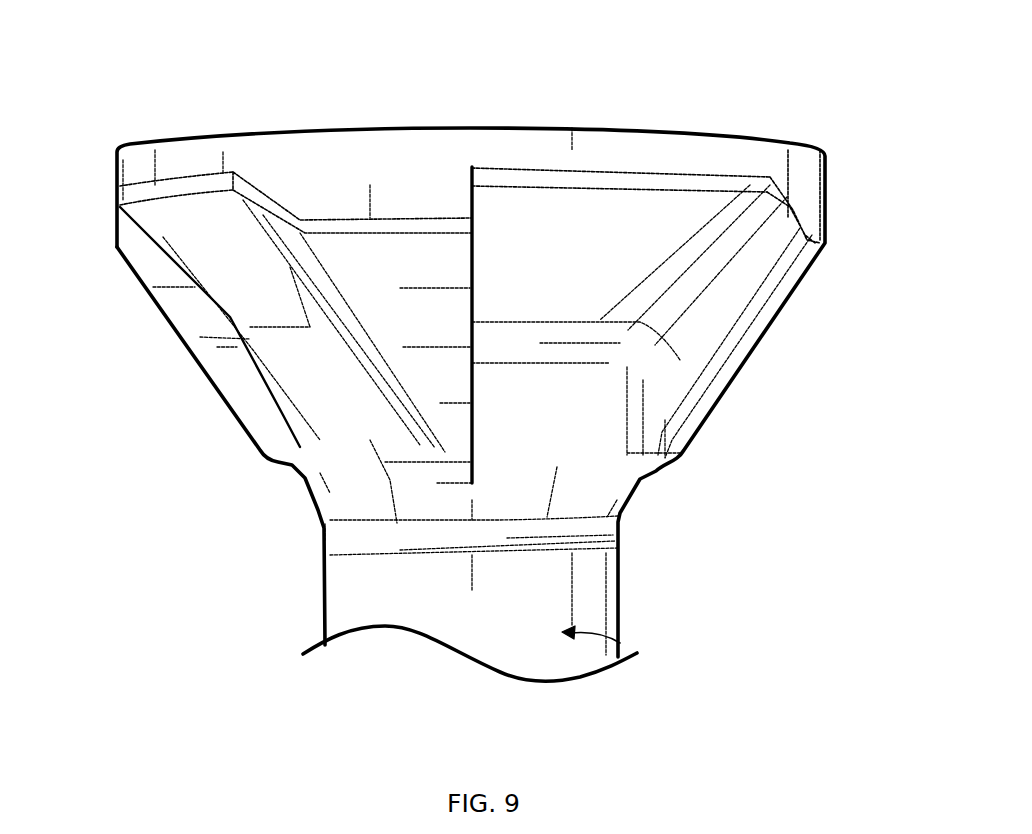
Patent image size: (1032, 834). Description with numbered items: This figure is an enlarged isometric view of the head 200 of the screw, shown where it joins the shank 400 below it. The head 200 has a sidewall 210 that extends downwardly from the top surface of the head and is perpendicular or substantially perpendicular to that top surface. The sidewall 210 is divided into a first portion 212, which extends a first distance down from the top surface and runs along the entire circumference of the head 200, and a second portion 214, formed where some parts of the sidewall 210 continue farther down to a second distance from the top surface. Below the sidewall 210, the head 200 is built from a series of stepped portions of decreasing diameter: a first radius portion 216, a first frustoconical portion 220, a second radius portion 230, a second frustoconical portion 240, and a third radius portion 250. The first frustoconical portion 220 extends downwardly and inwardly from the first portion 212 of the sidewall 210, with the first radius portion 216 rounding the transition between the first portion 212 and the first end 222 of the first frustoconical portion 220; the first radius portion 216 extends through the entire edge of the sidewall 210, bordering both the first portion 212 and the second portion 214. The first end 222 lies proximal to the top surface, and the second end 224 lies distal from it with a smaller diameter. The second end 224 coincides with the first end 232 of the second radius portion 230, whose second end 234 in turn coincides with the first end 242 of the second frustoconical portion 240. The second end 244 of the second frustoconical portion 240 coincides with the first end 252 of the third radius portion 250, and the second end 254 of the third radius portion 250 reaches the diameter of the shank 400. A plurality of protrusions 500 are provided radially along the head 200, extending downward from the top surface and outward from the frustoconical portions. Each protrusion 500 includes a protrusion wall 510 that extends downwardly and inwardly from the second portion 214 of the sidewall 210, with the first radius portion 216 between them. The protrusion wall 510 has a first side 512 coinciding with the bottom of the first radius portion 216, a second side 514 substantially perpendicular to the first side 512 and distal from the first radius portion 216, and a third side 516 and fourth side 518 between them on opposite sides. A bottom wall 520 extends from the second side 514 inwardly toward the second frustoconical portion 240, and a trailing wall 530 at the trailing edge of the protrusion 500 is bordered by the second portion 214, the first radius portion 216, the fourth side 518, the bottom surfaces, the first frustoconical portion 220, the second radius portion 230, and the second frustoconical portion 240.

The head 200 is at (155, 147).
The sidewall 210 is at (750, 153).
The first portion 212 is at (137, 165).
The second portion 214 is at (314, 200).
The first radius portion 216 is at (703, 178).
The first frustoconical portion 220 is at (700, 243).
The first end 222 is at (573, 188).
The second end 224 is at (622, 310).
The second radius portion 230 is at (560, 343).
The first end 232 is at (235, 320).
The second end 234 is at (275, 367).
The second frustoconical portion 240 is at (447, 454).
The first end 242 is at (560, 364).
The second end 244 is at (587, 518).
The third radius portion 250 is at (615, 537).
The first end 252 is at (345, 519).
The second end 254 is at (350, 554).
The shank 400 is at (638, 652).
The protrusion 500 is at (357, 253).
The protrusion wall 510 is at (393, 253).
The first side 512 is at (431, 232).
The second side 514 is at (472, 454).
The third side 516 is at (290, 410).
The fourth side 518 is at (475, 253).
The bottom wall 520 is at (345, 480).
The trailing wall 530 is at (200, 337).